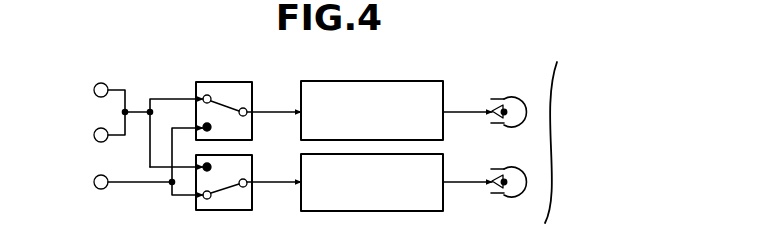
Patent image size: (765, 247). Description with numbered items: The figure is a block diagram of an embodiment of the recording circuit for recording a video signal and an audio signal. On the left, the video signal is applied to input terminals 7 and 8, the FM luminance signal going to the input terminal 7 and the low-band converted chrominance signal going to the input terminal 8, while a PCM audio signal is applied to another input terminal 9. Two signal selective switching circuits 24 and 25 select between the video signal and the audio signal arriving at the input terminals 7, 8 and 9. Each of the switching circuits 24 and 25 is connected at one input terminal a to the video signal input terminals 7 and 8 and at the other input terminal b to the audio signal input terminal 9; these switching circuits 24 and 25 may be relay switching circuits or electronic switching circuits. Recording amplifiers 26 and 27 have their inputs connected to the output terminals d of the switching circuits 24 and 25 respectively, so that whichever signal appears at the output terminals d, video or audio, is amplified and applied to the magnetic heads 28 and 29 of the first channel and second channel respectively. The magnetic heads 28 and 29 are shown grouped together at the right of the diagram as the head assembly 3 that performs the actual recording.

The stereo speaker unit 3 is at (553, 92).
The input terminal 7 is at (92, 90).
The input terminal 8 is at (92, 136).
The input terminal 9 is at (92, 184).
The signal selective switching circuit 24 is at (229, 82).
The signal selective switching circuit 25 is at (242, 154).
The recording amplifier 26 is at (413, 81).
The recording amplifier 27 is at (430, 152).
The magnetic head 28 is at (519, 97).
The magnetic head 29 is at (517, 197).